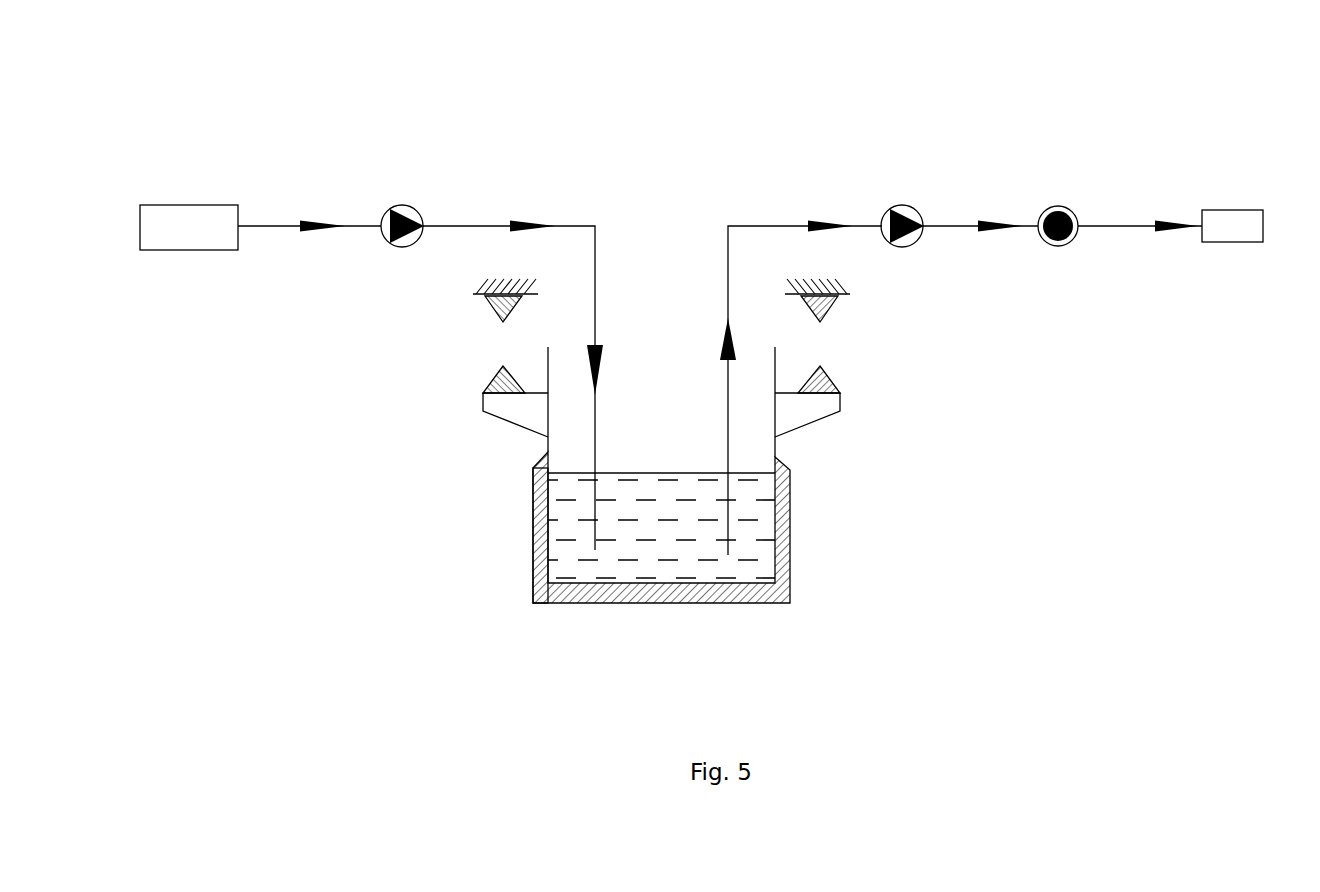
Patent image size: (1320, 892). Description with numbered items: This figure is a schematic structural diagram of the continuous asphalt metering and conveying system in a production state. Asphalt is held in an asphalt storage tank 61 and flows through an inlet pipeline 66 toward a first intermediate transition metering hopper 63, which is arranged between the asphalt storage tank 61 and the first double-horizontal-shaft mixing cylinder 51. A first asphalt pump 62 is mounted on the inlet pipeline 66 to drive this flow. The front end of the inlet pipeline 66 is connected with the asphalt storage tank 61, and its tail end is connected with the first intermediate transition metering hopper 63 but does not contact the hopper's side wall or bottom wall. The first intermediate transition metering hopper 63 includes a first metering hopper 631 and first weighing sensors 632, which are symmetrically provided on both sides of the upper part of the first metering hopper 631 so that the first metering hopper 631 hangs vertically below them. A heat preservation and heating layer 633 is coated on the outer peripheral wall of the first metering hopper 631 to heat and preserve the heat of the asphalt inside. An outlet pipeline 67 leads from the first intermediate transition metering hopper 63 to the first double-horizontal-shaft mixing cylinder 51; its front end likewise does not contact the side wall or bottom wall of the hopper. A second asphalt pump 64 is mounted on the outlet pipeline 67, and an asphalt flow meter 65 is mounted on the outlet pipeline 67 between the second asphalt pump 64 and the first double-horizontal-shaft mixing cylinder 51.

The first double-horizontal-shaft mixing cylinder 51 is at (1247, 165).
The asphalt storage tank 61 is at (176, 169).
The first asphalt pump 62 is at (373, 168).
The first intermediate transition metering hopper 63 is at (661, 516).
The first metering hopper 631 is at (751, 525).
The first weighing sensor 632 is at (665, 358).
The heat preservation and heating layer 633 is at (456, 535).
The second asphalt pump 64 is at (933, 168).
The asphalt flow meter 65 is at (1092, 167).
The inlet pipeline 66 is at (513, 319).
The outlet pipeline 67 is at (801, 322).